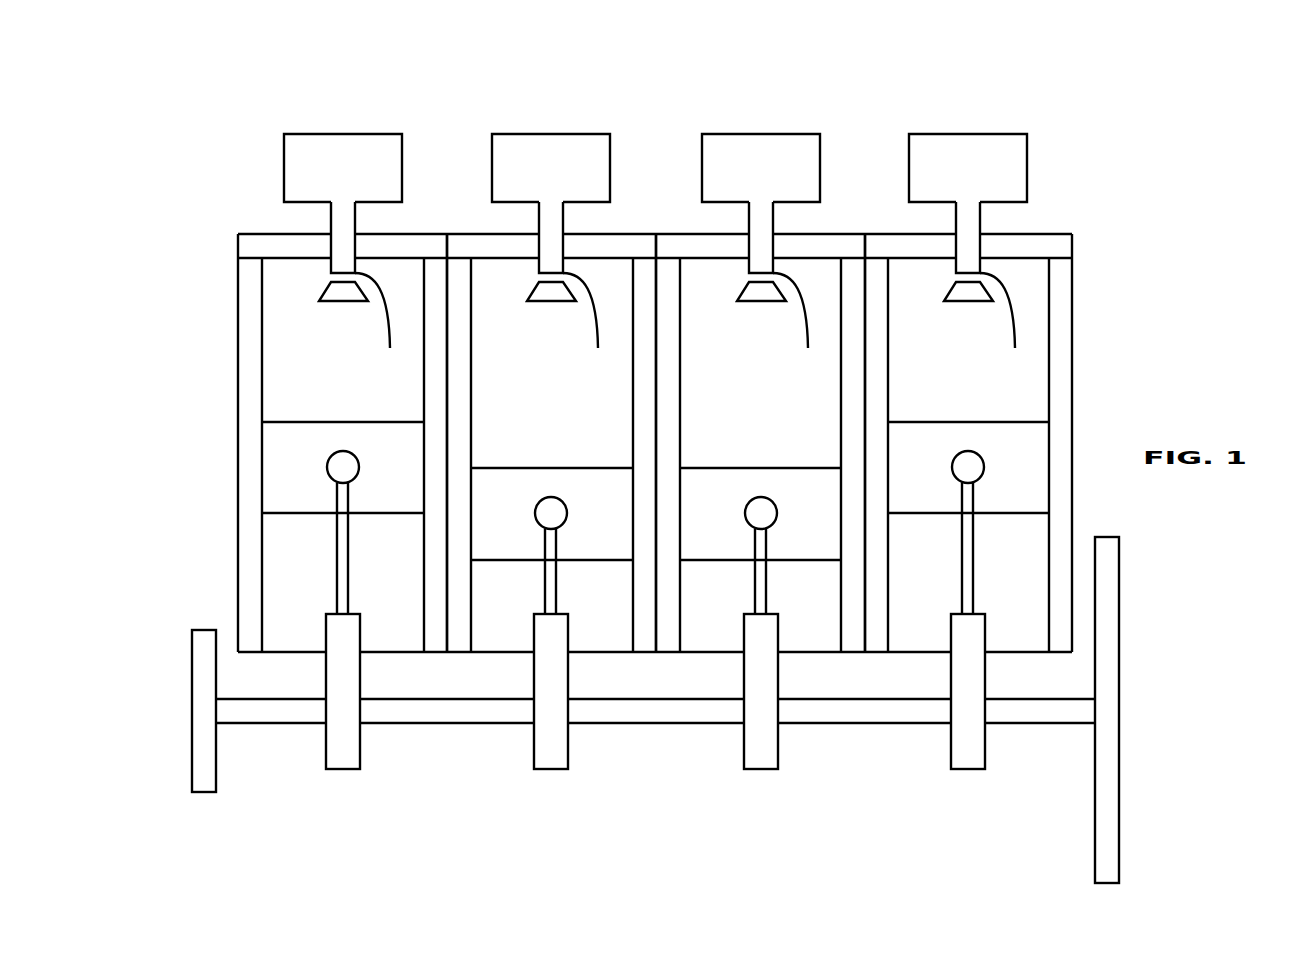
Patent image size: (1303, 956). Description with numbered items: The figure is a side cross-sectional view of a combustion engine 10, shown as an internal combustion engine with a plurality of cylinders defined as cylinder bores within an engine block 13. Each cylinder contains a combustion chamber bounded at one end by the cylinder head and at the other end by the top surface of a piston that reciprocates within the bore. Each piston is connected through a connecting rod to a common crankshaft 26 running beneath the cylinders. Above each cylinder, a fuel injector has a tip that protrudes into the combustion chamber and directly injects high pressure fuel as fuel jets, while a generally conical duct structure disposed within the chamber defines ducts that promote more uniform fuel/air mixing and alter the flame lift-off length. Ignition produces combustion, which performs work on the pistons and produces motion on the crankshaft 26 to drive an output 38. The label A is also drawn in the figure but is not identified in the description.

The combustion engine 10 is at (1083, 144).
The engine block 13 is at (1055, 234).
The crankshaft 26 is at (519, 733).
The output 38 is at (1119, 700).
The direction of movement A is at (228, 513).